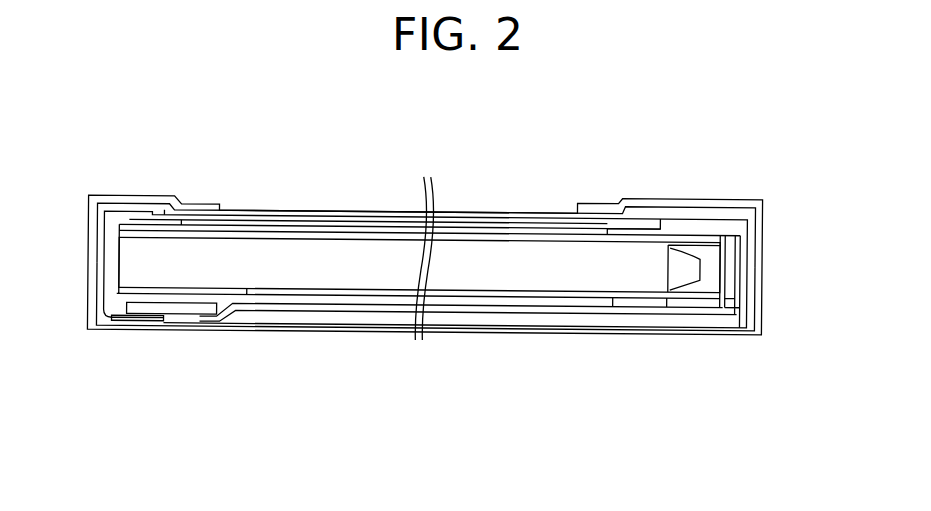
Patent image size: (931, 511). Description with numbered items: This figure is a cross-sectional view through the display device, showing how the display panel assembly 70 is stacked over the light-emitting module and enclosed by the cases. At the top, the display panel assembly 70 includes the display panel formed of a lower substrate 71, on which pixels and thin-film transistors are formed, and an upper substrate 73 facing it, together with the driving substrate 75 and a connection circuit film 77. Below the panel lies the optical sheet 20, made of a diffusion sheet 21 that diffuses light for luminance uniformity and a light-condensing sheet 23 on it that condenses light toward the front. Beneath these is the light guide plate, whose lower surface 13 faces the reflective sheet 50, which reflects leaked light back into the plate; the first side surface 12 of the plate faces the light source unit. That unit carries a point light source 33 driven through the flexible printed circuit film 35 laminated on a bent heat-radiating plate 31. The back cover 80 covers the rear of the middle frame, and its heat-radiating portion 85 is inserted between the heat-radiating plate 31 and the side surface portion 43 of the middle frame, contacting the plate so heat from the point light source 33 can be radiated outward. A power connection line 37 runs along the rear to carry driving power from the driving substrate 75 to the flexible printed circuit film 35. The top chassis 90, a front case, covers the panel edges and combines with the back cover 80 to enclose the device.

The top chassis 90 is at (733, 197).
The back cover 80 is at (590, 331).
The side surface portion 43 is at (742, 225).
The display panel assembly 70 is at (390, 167).
The upper substrate 73 is at (278, 222).
The lower substrate 71 is at (267, 143).
The optical sheet 20 is at (430, 199).
The light-condensing sheet 23 is at (497, 233).
The diffusion sheet 21 is at (548, 240).
The reflective sheet 50 is at (300, 291).
The driving substrate 75 is at (182, 317).
The connection circuit film 77 is at (117, 324).
The lower surface 13 is at (518, 291).
The power connection line 37 is at (482, 309).
The first side surface 12 is at (668, 275).
The point light source 33 is at (684, 276).
The flexible printed circuit film 35 is at (722, 262).
The heat-radiating portion 85 is at (741, 283).
The heat-radiating plate 31 is at (730, 296).